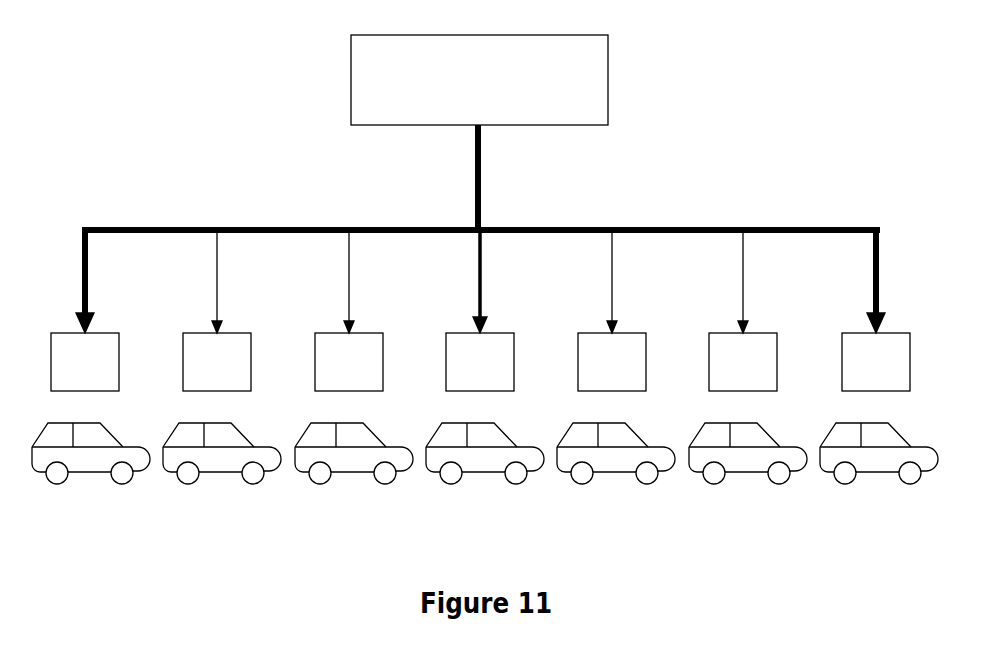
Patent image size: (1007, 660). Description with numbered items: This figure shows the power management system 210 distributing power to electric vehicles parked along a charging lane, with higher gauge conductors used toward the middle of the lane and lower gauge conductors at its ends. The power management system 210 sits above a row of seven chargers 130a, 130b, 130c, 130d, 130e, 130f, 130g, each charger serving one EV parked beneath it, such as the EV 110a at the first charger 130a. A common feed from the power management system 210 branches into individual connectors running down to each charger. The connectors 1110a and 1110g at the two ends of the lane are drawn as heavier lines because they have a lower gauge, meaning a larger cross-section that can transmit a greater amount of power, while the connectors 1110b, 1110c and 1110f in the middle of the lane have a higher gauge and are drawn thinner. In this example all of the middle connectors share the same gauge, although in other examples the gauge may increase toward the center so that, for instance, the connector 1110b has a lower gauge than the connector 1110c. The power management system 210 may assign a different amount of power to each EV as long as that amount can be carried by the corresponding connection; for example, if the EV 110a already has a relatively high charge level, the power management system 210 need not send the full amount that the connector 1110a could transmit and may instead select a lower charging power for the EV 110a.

The power management system 210 is at (535, 109).
The charger 130a is at (62, 375).
The charger 130b is at (194, 375).
The charger 130c is at (326, 375).
The charger 130d is at (457, 375).
The charger 130e is at (589, 375).
The charger 130f is at (721, 375).
The charger 130g is at (853, 375).
The connector 1110a is at (92, 285).
The connector 1110b is at (221, 285).
The connector 1110c is at (353, 285).
The connector 1110f is at (740, 282).
The connector 1110g is at (870, 285).
The EV 110a is at (90, 476).